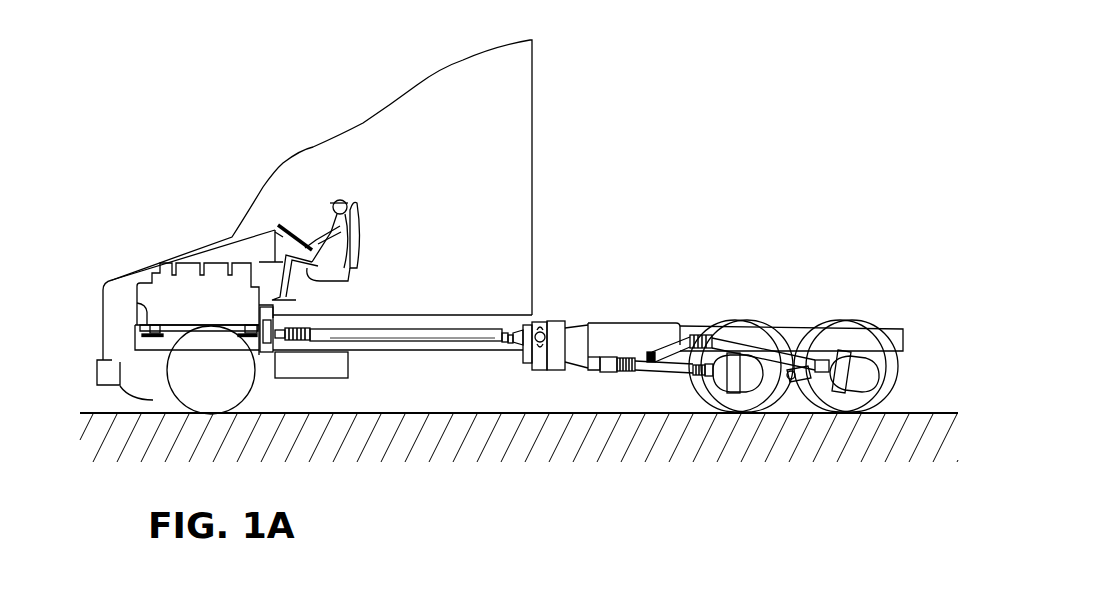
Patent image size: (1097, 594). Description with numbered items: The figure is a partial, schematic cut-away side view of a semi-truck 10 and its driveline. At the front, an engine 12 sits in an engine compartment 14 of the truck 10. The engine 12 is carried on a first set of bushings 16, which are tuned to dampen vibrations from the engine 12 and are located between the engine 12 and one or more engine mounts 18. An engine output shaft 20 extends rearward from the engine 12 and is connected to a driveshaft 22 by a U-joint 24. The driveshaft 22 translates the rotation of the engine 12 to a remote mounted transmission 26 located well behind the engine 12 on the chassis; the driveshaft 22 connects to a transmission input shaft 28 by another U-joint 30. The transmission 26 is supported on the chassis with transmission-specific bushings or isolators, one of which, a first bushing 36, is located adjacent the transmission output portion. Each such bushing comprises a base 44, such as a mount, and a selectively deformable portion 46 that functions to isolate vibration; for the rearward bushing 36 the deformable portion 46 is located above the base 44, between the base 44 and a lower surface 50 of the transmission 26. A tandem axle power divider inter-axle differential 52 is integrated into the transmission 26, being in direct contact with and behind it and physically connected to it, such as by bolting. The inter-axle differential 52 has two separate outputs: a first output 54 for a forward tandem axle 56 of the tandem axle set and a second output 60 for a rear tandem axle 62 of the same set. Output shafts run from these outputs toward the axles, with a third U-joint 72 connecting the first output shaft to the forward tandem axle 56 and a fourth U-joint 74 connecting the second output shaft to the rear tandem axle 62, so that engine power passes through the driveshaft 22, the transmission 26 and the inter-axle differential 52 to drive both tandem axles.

The semi-truck 10 is at (320, 107).
The engine 12 is at (174, 258).
The engine compartment 14 is at (228, 235).
The first set of bushings 16 is at (140, 327).
The engine mounts 18 is at (142, 336).
The engine output shaft 20 is at (275, 322).
The driveshaft 22 is at (384, 334).
The U-joint 24 is at (281, 339).
The remote mounted transmission 26 is at (523, 362).
The transmission input shaft 28 is at (516, 333).
The U-joint 30 is at (508, 336).
The first bushing 36 is at (641, 336).
The base 44 is at (541, 323).
The selectively deformable portion 46 is at (545, 370).
The lower surface 50 is at (637, 374).
The tandem axle power divider inter-axle differential 52 is at (612, 323).
The first output 54 is at (598, 371).
The forward tandem axle 56 is at (737, 394).
The second output 60 is at (680, 323).
The rear tandem axle 62 is at (860, 392).
The third U-joint 72 is at (701, 378).
The fourth U-joint 74 is at (808, 382).